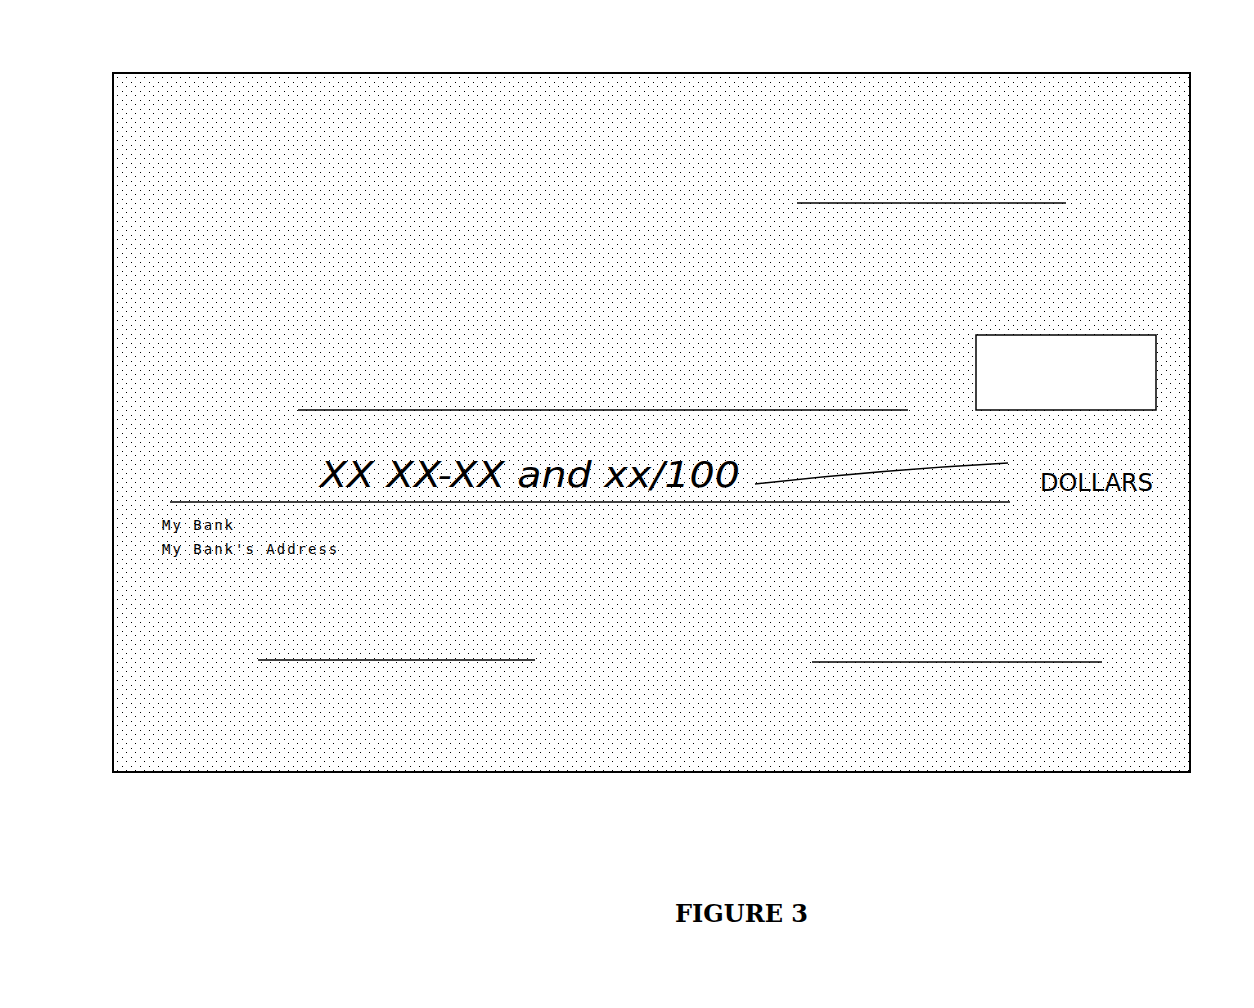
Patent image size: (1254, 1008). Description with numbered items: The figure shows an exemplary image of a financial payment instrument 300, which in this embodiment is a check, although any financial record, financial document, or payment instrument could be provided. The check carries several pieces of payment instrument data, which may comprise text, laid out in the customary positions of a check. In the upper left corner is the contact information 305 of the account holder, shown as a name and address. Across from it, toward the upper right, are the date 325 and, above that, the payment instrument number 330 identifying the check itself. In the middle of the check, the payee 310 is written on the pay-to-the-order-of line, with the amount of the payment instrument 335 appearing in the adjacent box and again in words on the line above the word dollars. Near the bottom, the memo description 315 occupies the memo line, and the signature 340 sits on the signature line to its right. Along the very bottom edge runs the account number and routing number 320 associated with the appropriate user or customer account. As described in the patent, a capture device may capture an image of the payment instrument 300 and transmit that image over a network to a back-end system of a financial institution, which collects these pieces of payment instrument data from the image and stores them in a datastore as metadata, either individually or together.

The financial payment instrument 300 is at (976, 74).
The contact information 305 is at (155, 105).
The payee 310 is at (155, 345).
The memo description 315 is at (155, 605).
The account number and routing number 320 is at (740, 787).
The date 325 is at (717, 142).
The payment instrument number 330 is at (1152, 115).
The amount of the payment instrument 335 is at (1158, 325).
The signature 340 is at (1100, 592).